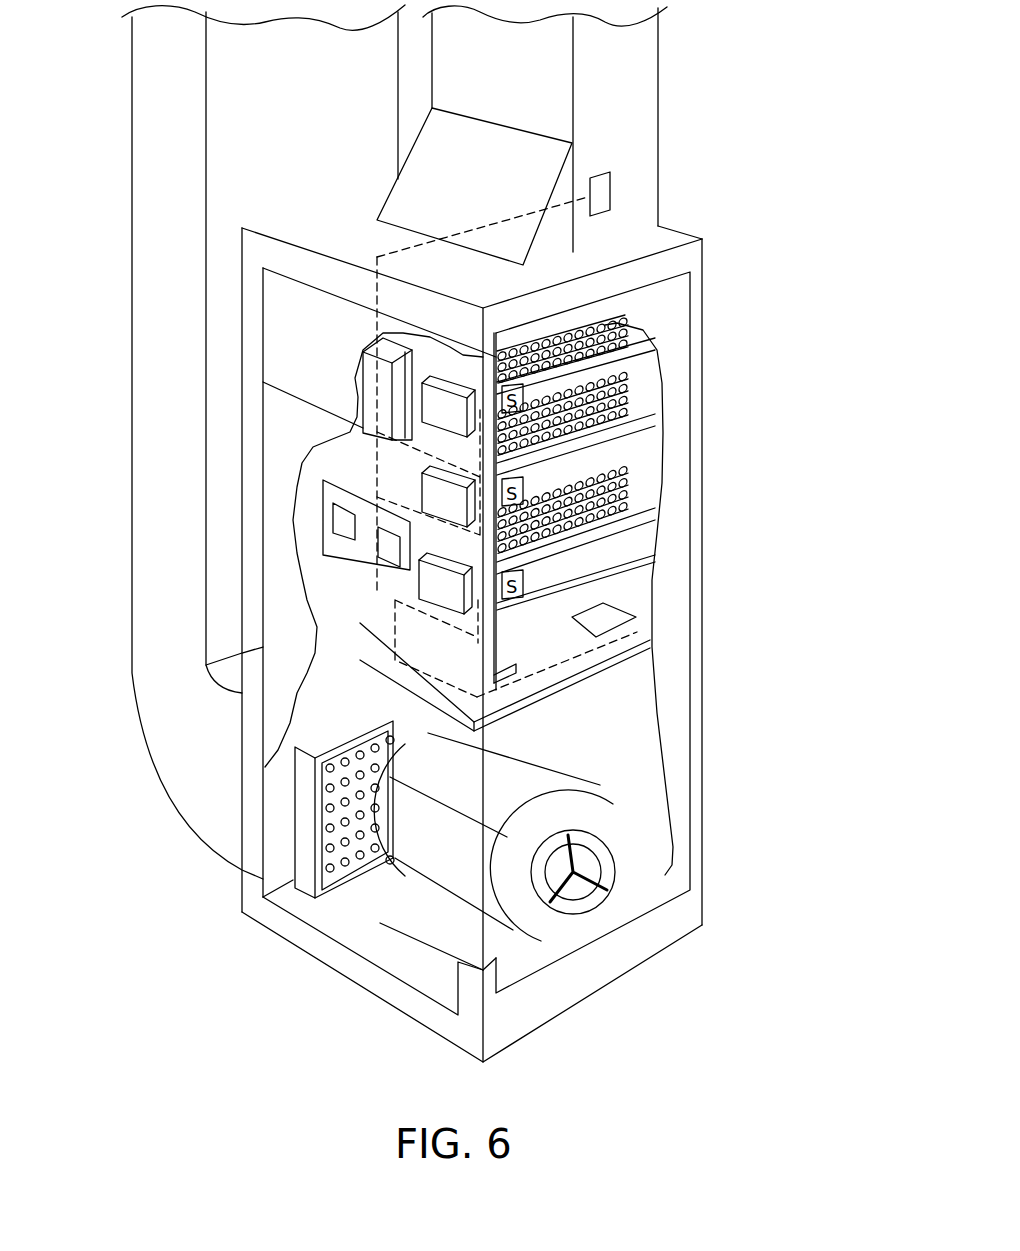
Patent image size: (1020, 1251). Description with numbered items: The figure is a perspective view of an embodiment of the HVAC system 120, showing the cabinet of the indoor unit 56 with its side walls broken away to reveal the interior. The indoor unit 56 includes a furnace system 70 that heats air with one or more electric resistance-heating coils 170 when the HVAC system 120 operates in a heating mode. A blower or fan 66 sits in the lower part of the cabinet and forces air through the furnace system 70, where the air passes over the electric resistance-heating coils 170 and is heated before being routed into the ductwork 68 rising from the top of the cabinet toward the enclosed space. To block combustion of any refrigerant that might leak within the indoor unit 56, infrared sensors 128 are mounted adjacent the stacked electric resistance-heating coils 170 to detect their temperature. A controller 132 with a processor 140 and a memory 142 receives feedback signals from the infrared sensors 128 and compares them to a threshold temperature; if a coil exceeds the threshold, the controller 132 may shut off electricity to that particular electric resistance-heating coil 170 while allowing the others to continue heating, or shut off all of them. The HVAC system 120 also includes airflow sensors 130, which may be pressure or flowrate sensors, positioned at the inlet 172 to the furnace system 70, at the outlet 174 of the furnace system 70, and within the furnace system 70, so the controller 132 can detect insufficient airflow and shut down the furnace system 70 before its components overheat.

The indoor unit 56 is at (750, 738).
The blower 66 is at (418, 857).
The ductwork 68 is at (642, 78).
The furnace system 70 is at (233, 437).
The HVAC system 120 is at (318, 1022).
The infrared sensors 128 is at (593, 343).
The airflow sensors 130 is at (611, 190).
The controller 132 is at (330, 532).
The processor 140 is at (325, 506).
The memory 142 is at (322, 585).
The electric resistance-heating coils 170 is at (638, 368).
The inlet 172 is at (655, 572).
The outlet 174 is at (680, 141).